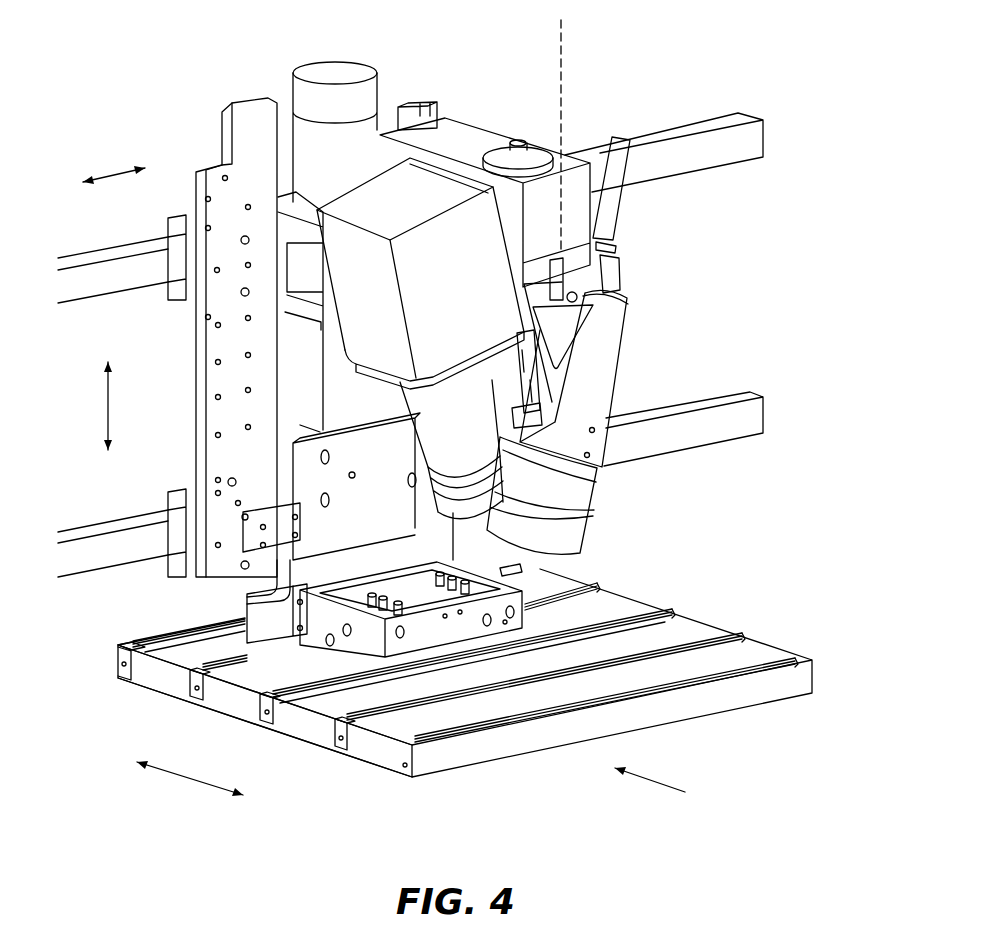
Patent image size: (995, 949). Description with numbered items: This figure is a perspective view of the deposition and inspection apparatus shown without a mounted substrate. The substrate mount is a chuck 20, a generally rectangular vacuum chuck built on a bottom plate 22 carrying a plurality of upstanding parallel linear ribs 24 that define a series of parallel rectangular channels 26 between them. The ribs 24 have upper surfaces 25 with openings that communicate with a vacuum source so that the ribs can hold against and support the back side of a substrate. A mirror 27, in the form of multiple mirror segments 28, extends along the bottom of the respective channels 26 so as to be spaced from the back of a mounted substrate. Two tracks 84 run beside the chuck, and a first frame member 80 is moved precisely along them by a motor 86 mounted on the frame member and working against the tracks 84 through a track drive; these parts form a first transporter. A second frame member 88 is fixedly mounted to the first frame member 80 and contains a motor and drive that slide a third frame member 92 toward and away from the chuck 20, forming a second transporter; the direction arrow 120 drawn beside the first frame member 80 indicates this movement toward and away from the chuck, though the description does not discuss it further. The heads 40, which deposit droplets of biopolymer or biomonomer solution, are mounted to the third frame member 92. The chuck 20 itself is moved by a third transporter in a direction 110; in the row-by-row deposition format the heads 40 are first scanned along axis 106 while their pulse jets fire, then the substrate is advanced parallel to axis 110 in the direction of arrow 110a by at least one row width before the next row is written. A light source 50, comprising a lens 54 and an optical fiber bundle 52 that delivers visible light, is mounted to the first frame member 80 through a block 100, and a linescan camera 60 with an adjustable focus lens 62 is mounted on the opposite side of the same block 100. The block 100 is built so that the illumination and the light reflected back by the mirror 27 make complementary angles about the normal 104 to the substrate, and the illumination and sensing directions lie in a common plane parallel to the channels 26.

The chuck 20 is at (453, 775).
The bottom plate 22 is at (167, 687).
The ribs 24 is at (115, 653).
The upper surfaces 25 is at (293, 703).
The channels 26 is at (173, 645).
The mirror 27 is at (227, 698).
The mirror segments 28 is at (163, 665).
The heads 40 is at (457, 563).
The light source 50 is at (603, 345).
The optical fiber bundle 52 is at (618, 210).
The lens 54 is at (597, 507).
The linescan camera 60 is at (435, 185).
The adjustable focus lens 62 is at (463, 490).
The first frame member 80 is at (188, 407).
The tracks 84 is at (90, 252).
The motor 86 is at (380, 100).
The second frame member 88 is at (311, 367).
The third frame member 92 is at (300, 453).
The block 100 is at (565, 322).
The normal 104 is at (562, 72).
The axis 106 is at (120, 173).
The direction 110 is at (193, 787).
The arrow 110a is at (660, 777).
The vertical motion direction 120 is at (105, 410).